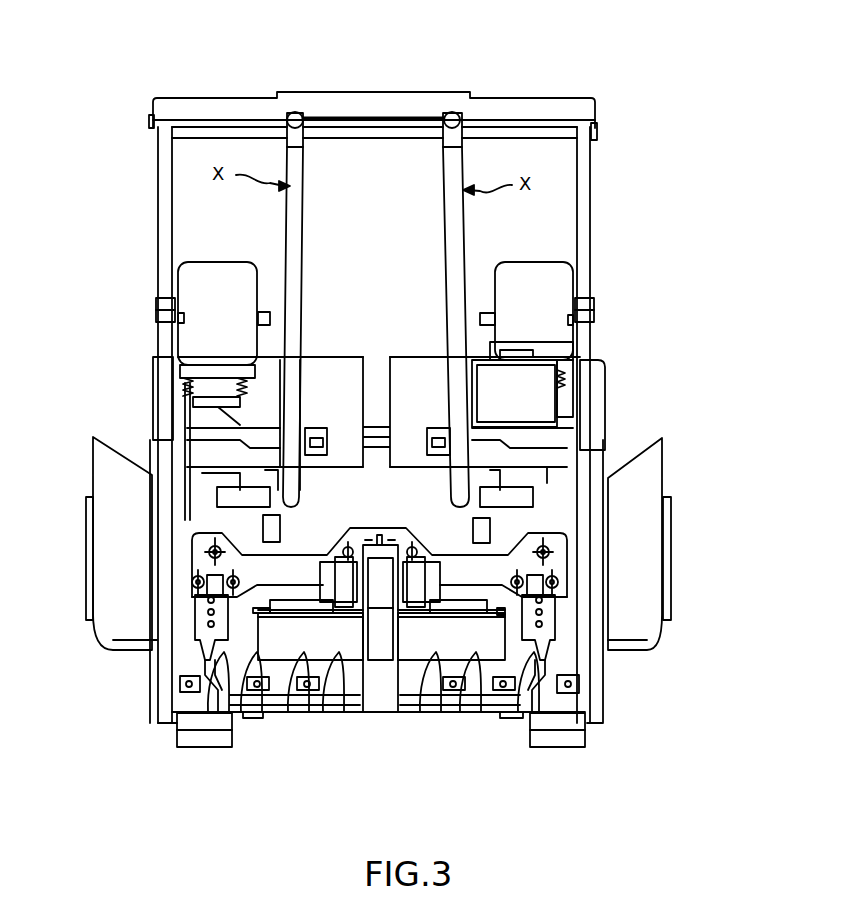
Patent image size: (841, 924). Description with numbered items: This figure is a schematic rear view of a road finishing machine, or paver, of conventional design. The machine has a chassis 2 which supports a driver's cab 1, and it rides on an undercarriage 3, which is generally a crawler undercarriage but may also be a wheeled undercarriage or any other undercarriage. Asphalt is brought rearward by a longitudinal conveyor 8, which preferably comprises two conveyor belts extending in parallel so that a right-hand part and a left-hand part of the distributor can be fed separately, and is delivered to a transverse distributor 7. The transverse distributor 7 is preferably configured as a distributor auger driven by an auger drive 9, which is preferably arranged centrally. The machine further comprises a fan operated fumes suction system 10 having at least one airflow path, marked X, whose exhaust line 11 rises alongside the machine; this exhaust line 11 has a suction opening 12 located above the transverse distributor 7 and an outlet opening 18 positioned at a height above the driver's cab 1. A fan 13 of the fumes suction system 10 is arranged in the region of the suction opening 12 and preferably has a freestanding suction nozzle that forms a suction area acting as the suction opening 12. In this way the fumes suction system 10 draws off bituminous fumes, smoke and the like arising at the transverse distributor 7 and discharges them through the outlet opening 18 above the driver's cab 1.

The driver's cab 1 is at (203, 415).
The chassis 2 is at (594, 366).
The undercarriage 3 is at (183, 738).
The transverse distributor 7 is at (383, 697).
The longitudinal conveyor 8 is at (295, 605).
The auger drive 9 is at (393, 705).
The fumes suction system 10 is at (432, 351).
The exhaust line 11 is at (301, 219).
The suction opening 12 is at (180, 528).
The fan 13 is at (223, 500).
The outlet opening 18 is at (297, 112).